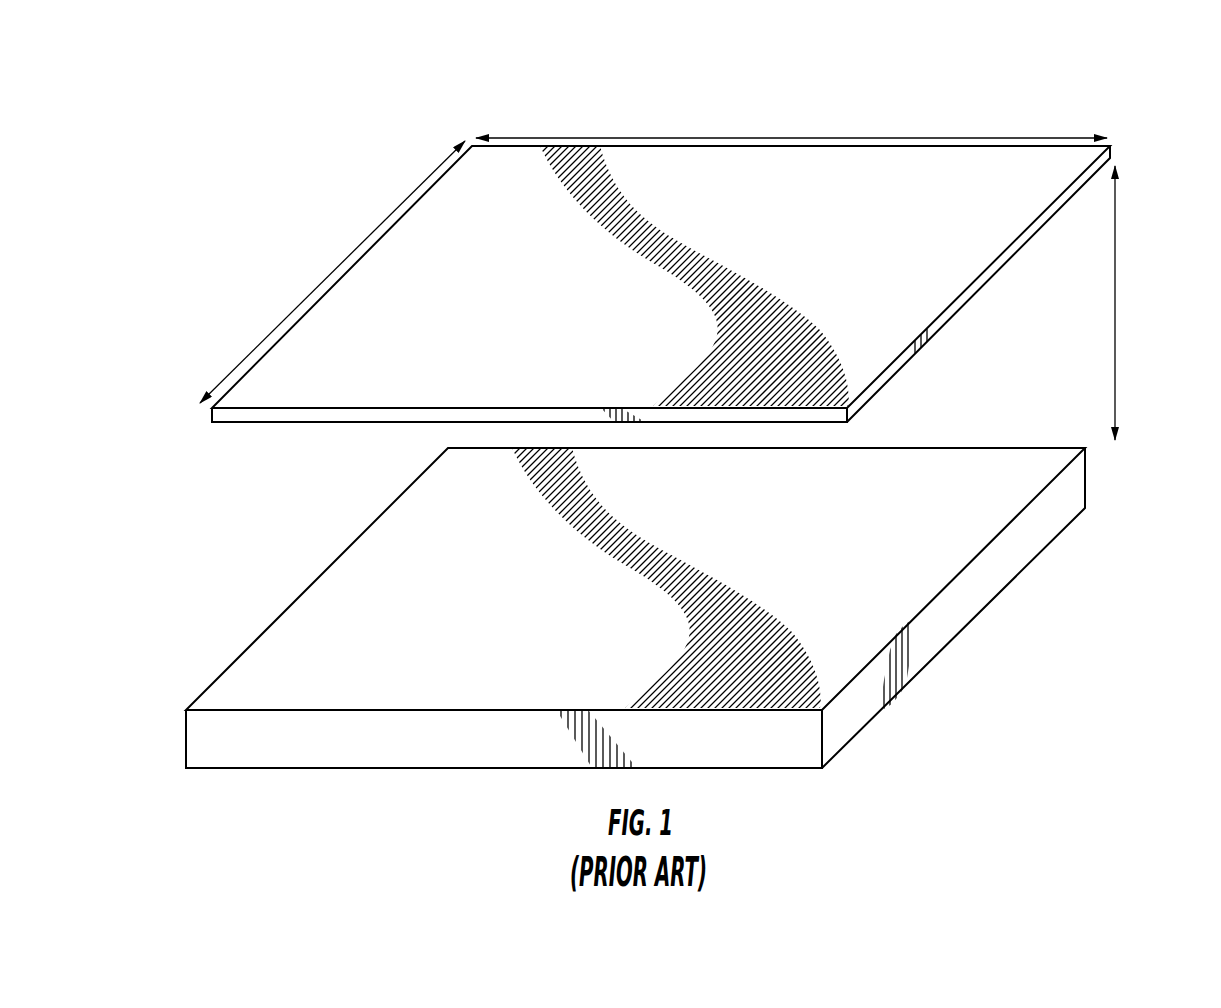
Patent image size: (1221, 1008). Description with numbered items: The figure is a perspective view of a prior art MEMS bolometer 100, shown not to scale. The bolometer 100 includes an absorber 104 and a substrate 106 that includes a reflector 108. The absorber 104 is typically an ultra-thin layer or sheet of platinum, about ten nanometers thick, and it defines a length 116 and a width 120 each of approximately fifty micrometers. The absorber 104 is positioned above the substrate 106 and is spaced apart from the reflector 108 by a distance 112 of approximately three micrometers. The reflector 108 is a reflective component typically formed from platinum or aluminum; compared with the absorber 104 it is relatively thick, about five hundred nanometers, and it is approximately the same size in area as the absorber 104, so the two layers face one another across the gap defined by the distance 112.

The MEMS bolometer 100 is at (1159, 342).
The absorber 104 is at (1023, 170).
The substrate 106 is at (610, 605).
The reflector 108 is at (962, 530).
The distance 112 is at (1117, 227).
The length 116 is at (780, 137).
The width 120 is at (337, 267).